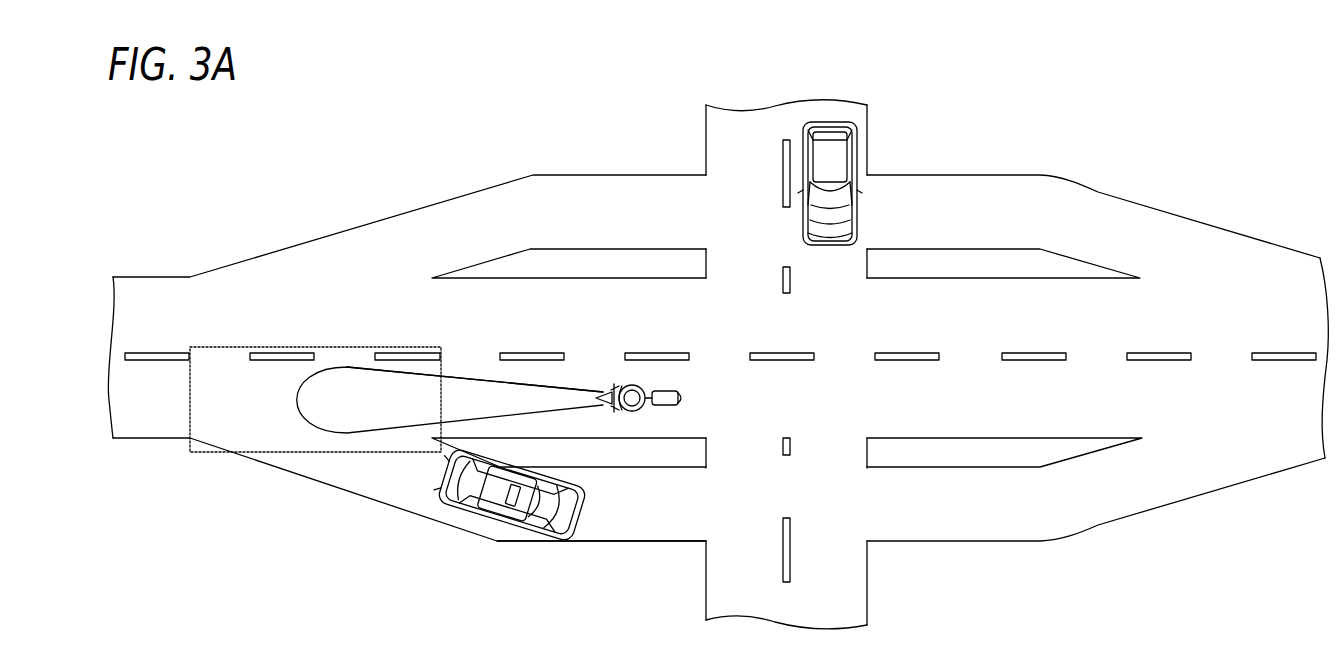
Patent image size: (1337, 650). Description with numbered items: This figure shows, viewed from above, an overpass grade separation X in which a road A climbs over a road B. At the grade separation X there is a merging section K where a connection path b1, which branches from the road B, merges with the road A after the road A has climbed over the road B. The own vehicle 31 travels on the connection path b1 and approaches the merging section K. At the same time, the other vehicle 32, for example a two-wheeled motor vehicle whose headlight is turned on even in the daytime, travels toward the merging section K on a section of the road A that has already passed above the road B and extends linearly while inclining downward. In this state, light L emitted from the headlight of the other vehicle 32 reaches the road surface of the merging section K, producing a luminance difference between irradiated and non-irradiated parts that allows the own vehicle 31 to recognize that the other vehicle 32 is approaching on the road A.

The light L is at (345, 375).
The road A is at (600, 375).
The other vehicle 32 is at (650, 388).
The overpass grade separation X is at (902, 148).
The merging section K is at (300, 455).
The own vehicle 31 is at (498, 515).
The connection path b1 is at (629, 512).
The road B is at (843, 573).